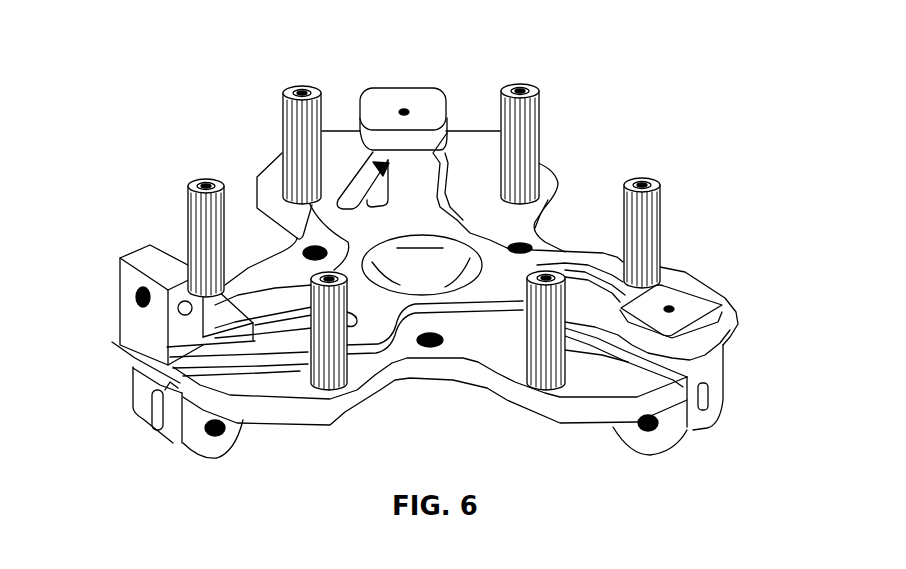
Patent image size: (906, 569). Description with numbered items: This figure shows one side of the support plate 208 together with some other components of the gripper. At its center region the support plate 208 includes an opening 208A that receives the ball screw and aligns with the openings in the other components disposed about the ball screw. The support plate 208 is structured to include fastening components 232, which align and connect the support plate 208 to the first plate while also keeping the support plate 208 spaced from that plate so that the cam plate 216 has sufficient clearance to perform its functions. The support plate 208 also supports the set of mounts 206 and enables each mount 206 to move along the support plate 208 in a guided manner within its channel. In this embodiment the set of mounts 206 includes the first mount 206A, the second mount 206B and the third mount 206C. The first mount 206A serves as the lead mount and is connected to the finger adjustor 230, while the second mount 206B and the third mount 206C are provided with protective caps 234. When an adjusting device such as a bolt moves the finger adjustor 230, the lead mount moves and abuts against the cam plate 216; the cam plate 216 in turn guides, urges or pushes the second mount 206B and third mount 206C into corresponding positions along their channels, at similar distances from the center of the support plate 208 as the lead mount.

The set of mounts 206 is at (406, 262).
The first mount 206A is at (124, 424).
The second mount 206B is at (329, 136).
The third mount 206C is at (713, 440).
The support plate 208 is at (452, 207).
The opening 208A is at (422, 265).
The cam plate 216 is at (479, 290).
The finger adjustor 230 is at (122, 322).
The fastening components 232 is at (660, 213).
The protective caps 234 is at (692, 313).